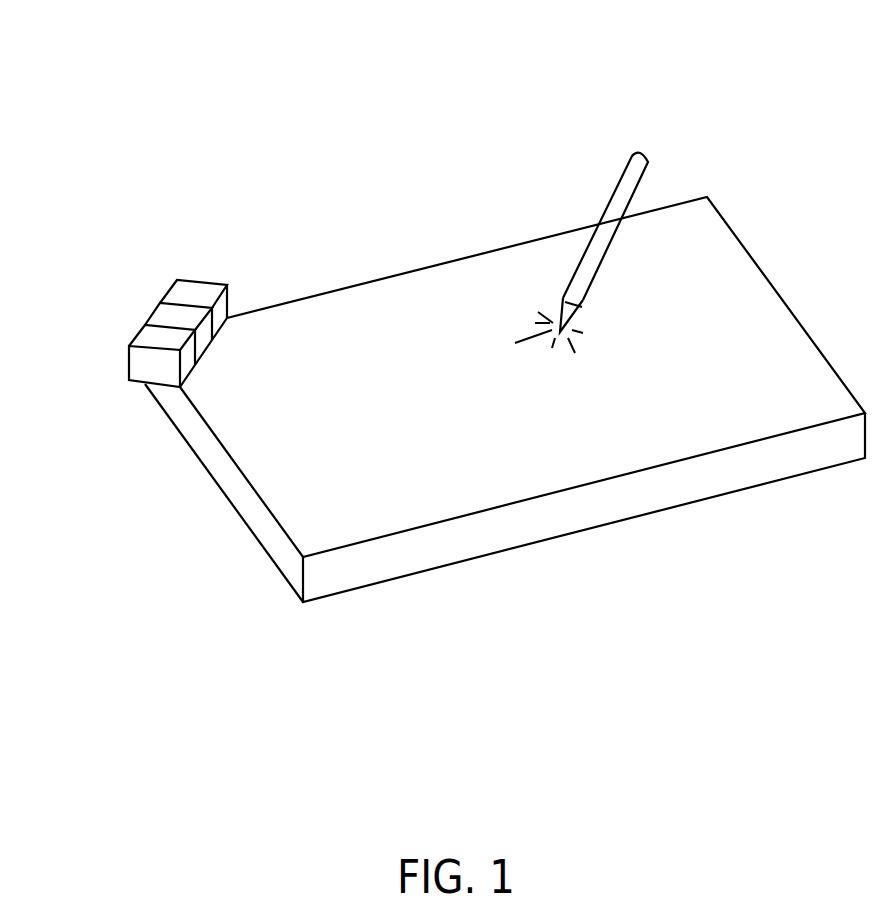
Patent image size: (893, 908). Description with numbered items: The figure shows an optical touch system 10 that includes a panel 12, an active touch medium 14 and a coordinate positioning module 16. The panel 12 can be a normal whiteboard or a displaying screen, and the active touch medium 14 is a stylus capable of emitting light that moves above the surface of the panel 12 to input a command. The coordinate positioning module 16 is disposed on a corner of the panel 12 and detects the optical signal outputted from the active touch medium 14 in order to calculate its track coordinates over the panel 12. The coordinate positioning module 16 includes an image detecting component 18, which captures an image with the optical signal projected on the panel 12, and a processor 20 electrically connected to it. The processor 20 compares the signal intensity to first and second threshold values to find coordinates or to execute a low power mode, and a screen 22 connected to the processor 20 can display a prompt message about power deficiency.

The optical touch system 10 is at (726, 76).
The panel 12 is at (705, 478).
The active touch medium 14 is at (622, 202).
The coordinate positioning module 16 is at (137, 225).
The image detecting component 18 is at (153, 333).
The processor 20 is at (172, 312).
The screen 22 is at (190, 292).